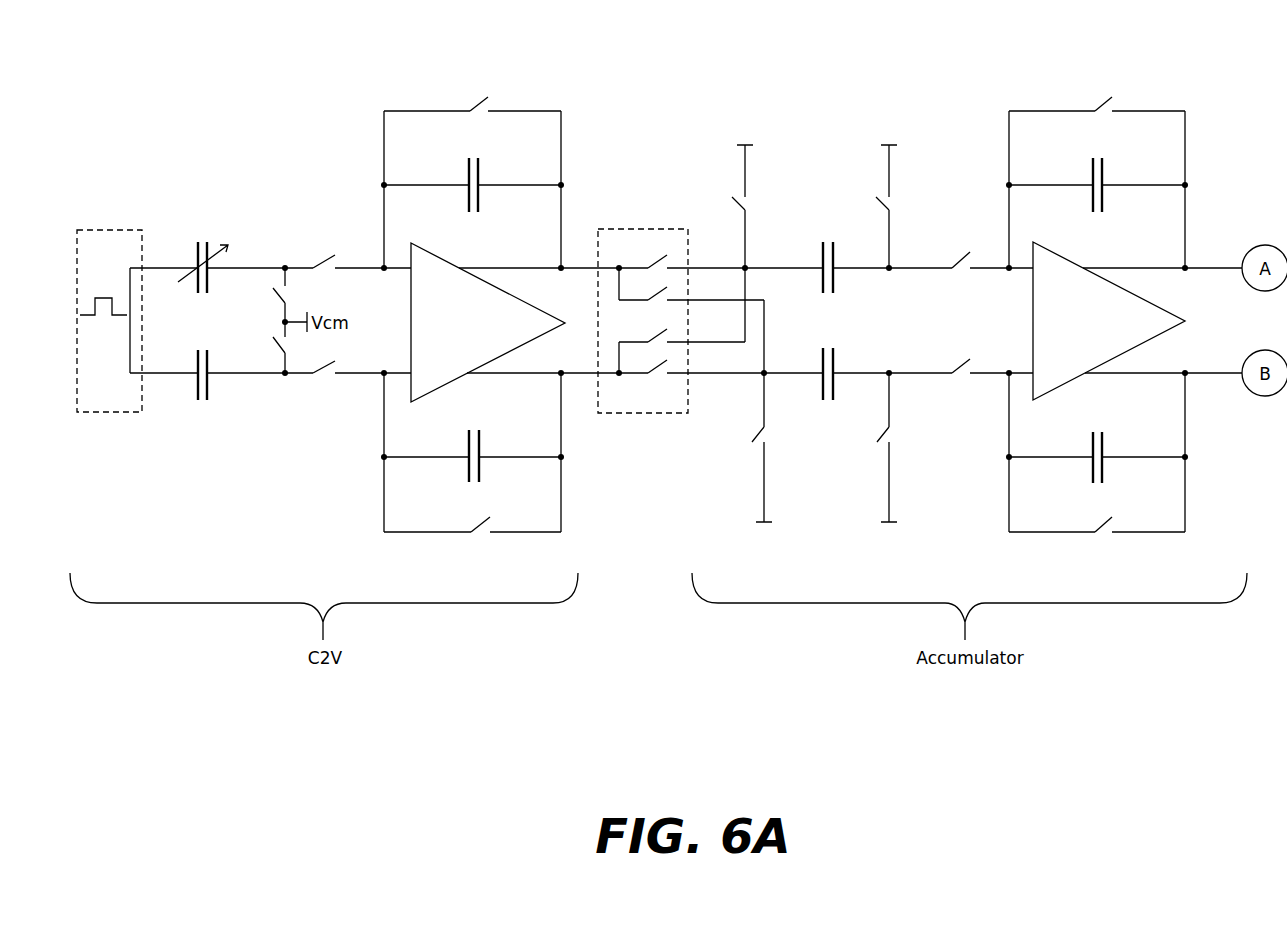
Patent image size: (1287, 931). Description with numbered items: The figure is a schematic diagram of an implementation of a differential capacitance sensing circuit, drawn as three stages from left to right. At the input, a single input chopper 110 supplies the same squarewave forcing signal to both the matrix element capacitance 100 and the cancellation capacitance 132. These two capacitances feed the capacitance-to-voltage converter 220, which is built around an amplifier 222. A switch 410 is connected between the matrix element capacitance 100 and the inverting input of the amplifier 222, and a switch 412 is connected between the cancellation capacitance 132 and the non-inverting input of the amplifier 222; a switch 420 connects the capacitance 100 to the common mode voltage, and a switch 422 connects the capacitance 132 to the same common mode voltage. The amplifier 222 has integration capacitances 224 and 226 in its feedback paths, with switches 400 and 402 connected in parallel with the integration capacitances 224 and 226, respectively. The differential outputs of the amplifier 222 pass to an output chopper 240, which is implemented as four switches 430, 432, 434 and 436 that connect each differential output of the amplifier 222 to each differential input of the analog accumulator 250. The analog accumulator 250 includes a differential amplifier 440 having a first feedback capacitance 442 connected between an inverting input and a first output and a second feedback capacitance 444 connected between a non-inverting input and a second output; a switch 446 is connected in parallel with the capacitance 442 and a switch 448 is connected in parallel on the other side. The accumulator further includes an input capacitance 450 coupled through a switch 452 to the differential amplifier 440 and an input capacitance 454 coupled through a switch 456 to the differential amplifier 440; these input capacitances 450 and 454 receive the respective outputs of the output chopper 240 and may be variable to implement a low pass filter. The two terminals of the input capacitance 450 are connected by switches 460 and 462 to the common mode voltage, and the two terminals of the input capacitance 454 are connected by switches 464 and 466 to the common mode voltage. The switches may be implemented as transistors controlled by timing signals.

The input chopper 110 is at (130, 230).
The matrix element capacitance 100 is at (197, 250).
The cancellation capacitance 132 is at (197, 392).
The switch 420 is at (273, 297).
The switch 422 is at (282, 345).
The switch 410 is at (335, 255).
The switch 412 is at (330, 363).
The capacitance-to-voltage converter 220 is at (578, 104).
The switch 400 is at (487, 98).
The switch 402 is at (477, 527).
The integration capacitance 224 is at (467, 167).
The integration capacitance 226 is at (468, 468).
The amplifier 222 is at (488, 322).
The output chopper 240 is at (679, 231).
The switch 430 is at (663, 253).
The switch 432 is at (695, 298).
The switch 434 is at (664, 327).
The switch 436 is at (650, 373).
The switch 460 is at (732, 197).
The switch 462 is at (877, 200).
The switch 464 is at (753, 443).
The switch 466 is at (878, 440).
The input capacitance 450 is at (822, 278).
The input capacitance 454 is at (833, 362).
The switch 452 is at (955, 262).
The switch 456 is at (955, 362).
The analog accumulator 250 is at (1197, 104).
The switch 446 is at (1112, 97).
The switch 448 is at (1103, 528).
The first feedback capacitance 442 is at (1092, 163).
The second feedback capacitance 444 is at (1092, 475).
The differential amplifier 440 is at (1188, 318).